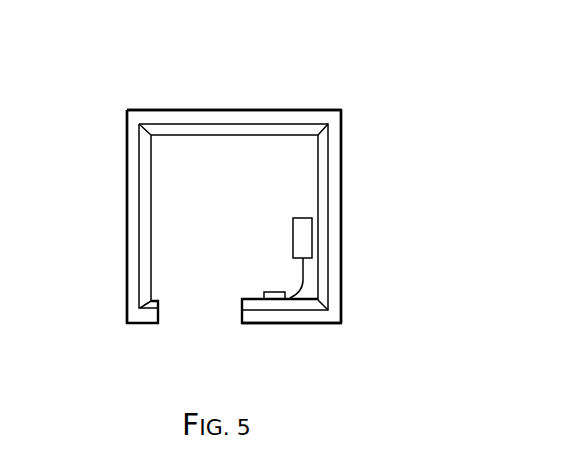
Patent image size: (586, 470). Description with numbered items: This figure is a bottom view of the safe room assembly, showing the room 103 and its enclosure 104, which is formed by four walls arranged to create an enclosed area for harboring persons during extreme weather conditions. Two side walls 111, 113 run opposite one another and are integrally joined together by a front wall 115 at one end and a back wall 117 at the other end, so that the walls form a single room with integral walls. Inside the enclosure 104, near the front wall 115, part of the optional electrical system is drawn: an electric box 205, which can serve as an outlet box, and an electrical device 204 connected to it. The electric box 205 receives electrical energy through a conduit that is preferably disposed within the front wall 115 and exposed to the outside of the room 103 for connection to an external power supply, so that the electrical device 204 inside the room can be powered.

The room 103 is at (117, 45).
The enclosure 104 is at (107, 117).
The side wall 111 is at (105, 203).
The side wall 113 is at (357, 233).
The front wall 115 is at (283, 343).
The back wall 117 is at (250, 90).
The electrical device 204 is at (293, 233).
The electric box 205 is at (266, 292).